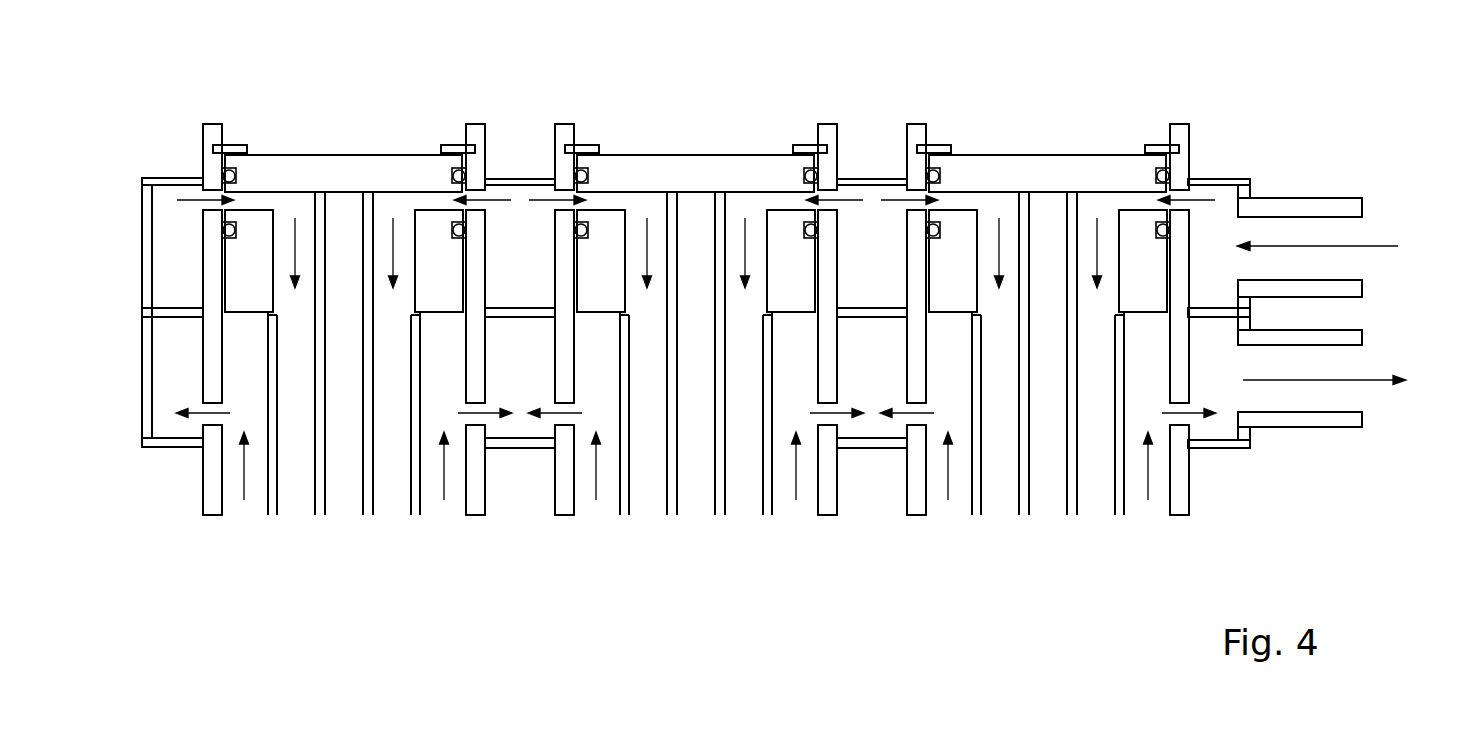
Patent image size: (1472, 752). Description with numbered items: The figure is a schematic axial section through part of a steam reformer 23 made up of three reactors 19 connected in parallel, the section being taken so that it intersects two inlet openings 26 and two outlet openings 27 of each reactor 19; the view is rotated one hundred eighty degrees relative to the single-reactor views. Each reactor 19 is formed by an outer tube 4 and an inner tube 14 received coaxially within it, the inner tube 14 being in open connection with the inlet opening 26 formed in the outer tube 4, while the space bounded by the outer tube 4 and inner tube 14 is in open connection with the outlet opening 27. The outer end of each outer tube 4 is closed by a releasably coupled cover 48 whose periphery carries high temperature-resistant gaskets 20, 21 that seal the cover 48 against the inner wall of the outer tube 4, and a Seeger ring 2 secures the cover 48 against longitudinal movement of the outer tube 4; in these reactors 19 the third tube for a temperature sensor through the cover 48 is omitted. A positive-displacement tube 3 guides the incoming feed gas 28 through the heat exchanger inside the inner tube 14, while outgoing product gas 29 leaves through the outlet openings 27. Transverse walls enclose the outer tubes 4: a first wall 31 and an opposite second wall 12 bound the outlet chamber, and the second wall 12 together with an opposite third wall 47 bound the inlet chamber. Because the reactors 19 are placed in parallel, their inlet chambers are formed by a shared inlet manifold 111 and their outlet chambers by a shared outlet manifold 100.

The Seeger ring 2 is at (696, 99).
The positive-displacement tube 3 is at (696, 381).
The outer tube 4 is at (698, 308).
The second wall 12 is at (168, 314).
The inner tube 14 is at (696, 441).
The reactor 19 is at (695, 107).
The gasket 20 is at (696, 114).
The gasket 21 is at (696, 142).
The steam reformer 23 is at (755, 419).
The inlet opening 26 is at (210, 192).
The outlet opening 27 is at (205, 426).
The incoming feed gas 28 is at (180, 204).
The outgoing product gas 29 is at (1165, 410).
The first wall 31 is at (152, 450).
The third wall 47 is at (152, 178).
The cover 48 is at (695, 148).
The outlet manifold 100 is at (180, 366).
The inlet manifold 111 is at (180, 258).